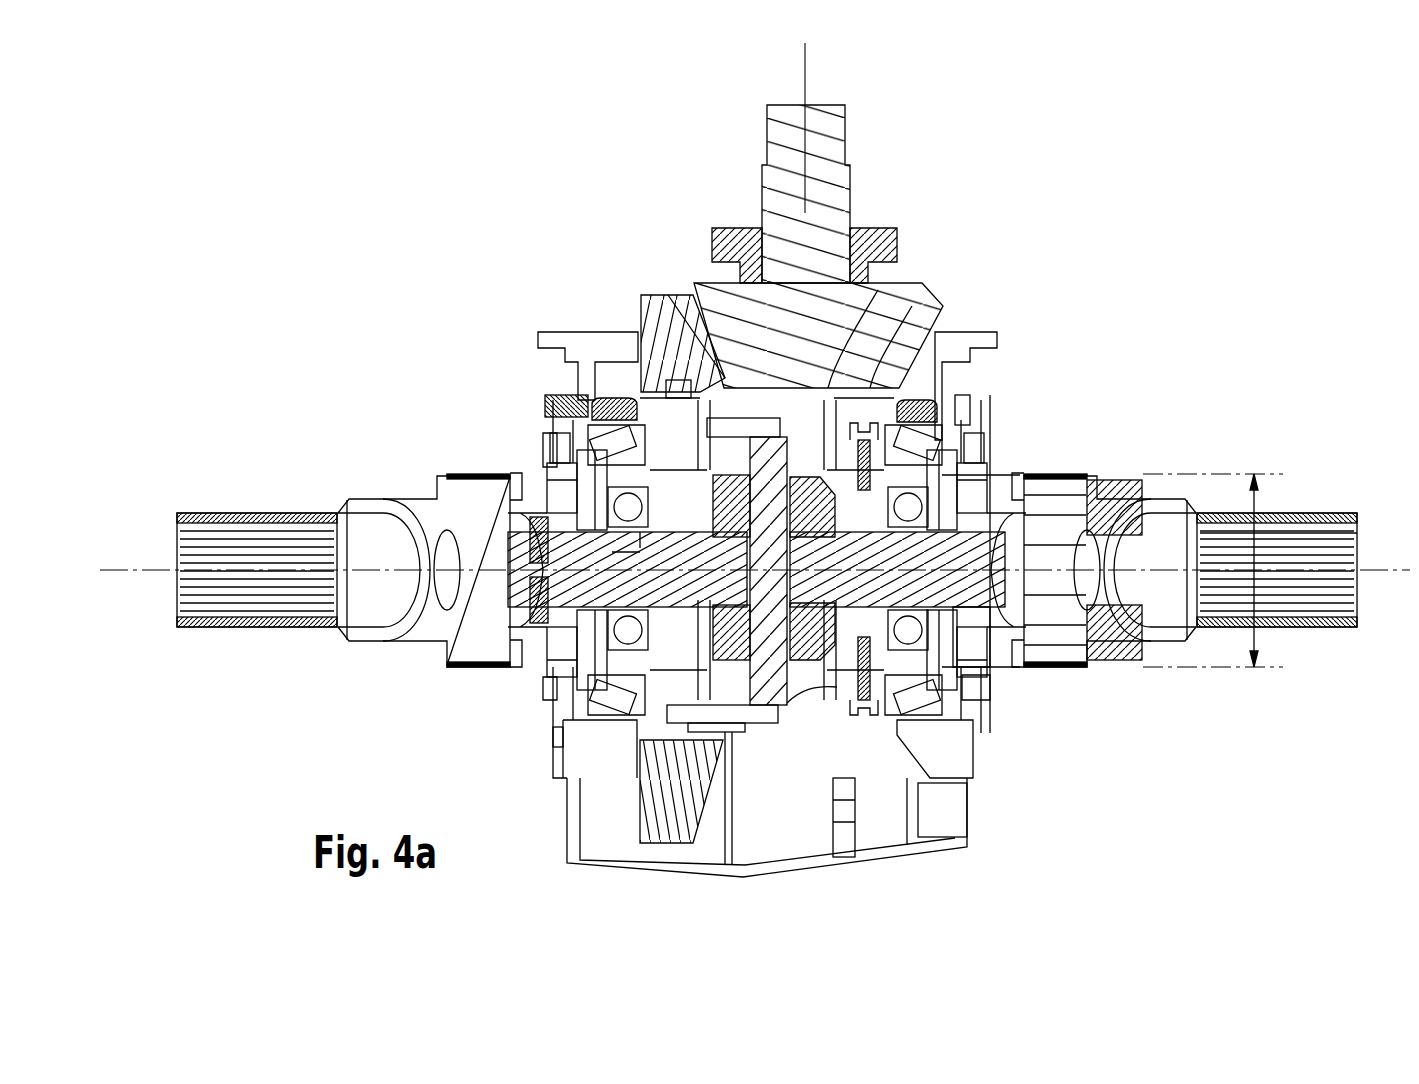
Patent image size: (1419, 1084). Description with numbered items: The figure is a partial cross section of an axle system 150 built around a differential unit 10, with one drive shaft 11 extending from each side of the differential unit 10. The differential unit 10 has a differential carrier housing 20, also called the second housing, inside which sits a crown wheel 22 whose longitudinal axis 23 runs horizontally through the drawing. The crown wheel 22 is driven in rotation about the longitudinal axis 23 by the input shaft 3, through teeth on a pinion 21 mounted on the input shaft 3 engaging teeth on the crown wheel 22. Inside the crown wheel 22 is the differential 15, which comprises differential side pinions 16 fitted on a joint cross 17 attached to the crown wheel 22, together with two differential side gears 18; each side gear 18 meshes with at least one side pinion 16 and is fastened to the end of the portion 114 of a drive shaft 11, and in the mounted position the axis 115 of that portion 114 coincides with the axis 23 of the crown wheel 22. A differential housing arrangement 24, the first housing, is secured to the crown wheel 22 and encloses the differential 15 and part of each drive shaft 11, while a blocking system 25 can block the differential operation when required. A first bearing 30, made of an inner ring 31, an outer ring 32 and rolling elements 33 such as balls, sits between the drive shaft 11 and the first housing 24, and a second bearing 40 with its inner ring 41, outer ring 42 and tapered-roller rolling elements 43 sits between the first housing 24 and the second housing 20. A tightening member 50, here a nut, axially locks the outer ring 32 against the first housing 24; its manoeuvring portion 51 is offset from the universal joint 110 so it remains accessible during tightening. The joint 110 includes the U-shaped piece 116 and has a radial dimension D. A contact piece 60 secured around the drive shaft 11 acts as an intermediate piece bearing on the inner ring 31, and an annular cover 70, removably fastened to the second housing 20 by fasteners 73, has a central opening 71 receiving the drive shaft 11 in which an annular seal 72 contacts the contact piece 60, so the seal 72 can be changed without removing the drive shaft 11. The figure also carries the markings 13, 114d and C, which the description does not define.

The input shaft 3 is at (830, 148).
The differential unit 10 is at (688, 205).
The drive shaft 11 is at (245, 505).
The rotational axis 13 is at (805, 82).
The differential 15 is at (810, 415).
The differential side pinion 16 is at (818, 700).
The joint cross 17 is at (405, 497).
The differential side gear 18 is at (860, 705).
The differential carrier housing 20 is at (590, 868).
The pinion 21 is at (920, 298).
The crown wheel 22 is at (658, 297).
The longitudinal axis 23 is at (140, 570).
The differential housing arrangement 24 is at (718, 832).
The blocking system 25 is at (866, 412).
The first bearing 30 is at (565, 672).
The inner ring 31 is at (610, 549).
The outer ring 32 is at (596, 410).
The rolling elements 33 is at (583, 478).
The second bearing 40 is at (605, 735).
The inner ring 41 is at (697, 325).
The outer ring 42 is at (548, 395).
The rolling elements 43 is at (610, 398).
The tightening member 50 is at (1000, 492).
The manoeuvring portion 51 is at (968, 440).
The contact piece 60 is at (985, 470).
The annular cover 70 is at (980, 740).
The central opening 71 is at (990, 660).
The annular seal 72 is at (992, 695).
The fasteners 73 is at (565, 372).
The joint 110 is at (430, 680).
The portion of the drive shaft 114 is at (897, 569).
The spline diameter 114d is at (1322, 637).
The axis 115 is at (627, 569).
The U-shaped piece 116 is at (440, 615).
The axle system 150 is at (1118, 242).
The dimension line C is at (1195, 474).
The radial dimension D is at (1213, 682).